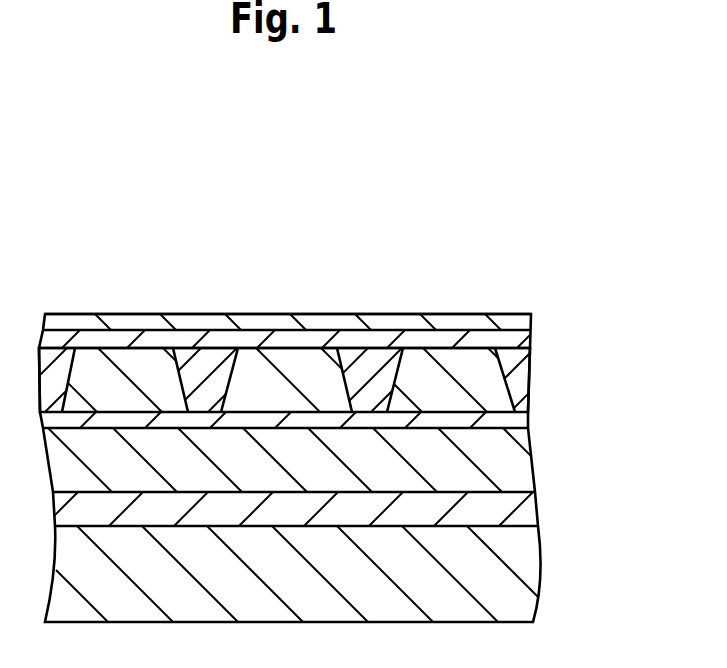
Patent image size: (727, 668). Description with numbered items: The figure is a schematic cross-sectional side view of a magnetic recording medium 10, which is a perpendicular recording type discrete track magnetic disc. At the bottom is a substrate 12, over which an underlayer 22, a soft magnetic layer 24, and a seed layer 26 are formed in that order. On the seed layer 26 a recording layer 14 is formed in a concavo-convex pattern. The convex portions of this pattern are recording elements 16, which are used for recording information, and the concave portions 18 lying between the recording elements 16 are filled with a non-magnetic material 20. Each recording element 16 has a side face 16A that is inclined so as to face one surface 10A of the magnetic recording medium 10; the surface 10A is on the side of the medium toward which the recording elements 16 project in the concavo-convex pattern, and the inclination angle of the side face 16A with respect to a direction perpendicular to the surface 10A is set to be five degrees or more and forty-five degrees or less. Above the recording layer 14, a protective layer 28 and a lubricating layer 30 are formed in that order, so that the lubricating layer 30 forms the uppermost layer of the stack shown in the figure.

The magnetic recording medium 10 is at (297, 184).
The surface 10A is at (110, 315).
The substrate 12 is at (542, 573).
The recording layer 14 is at (325, 324).
The recording elements 16 is at (282, 363).
The side face 16A is at (226, 363).
The concave portions 18 is at (379, 355).
The non-magnetic material 20 is at (370, 363).
The underlayer 22 is at (538, 512).
The soft magnetic layer 24 is at (534, 464).
The seed layer 26 is at (528, 422).
The protective layer 28 is at (532, 342).
The lubricating layer 30 is at (532, 323).